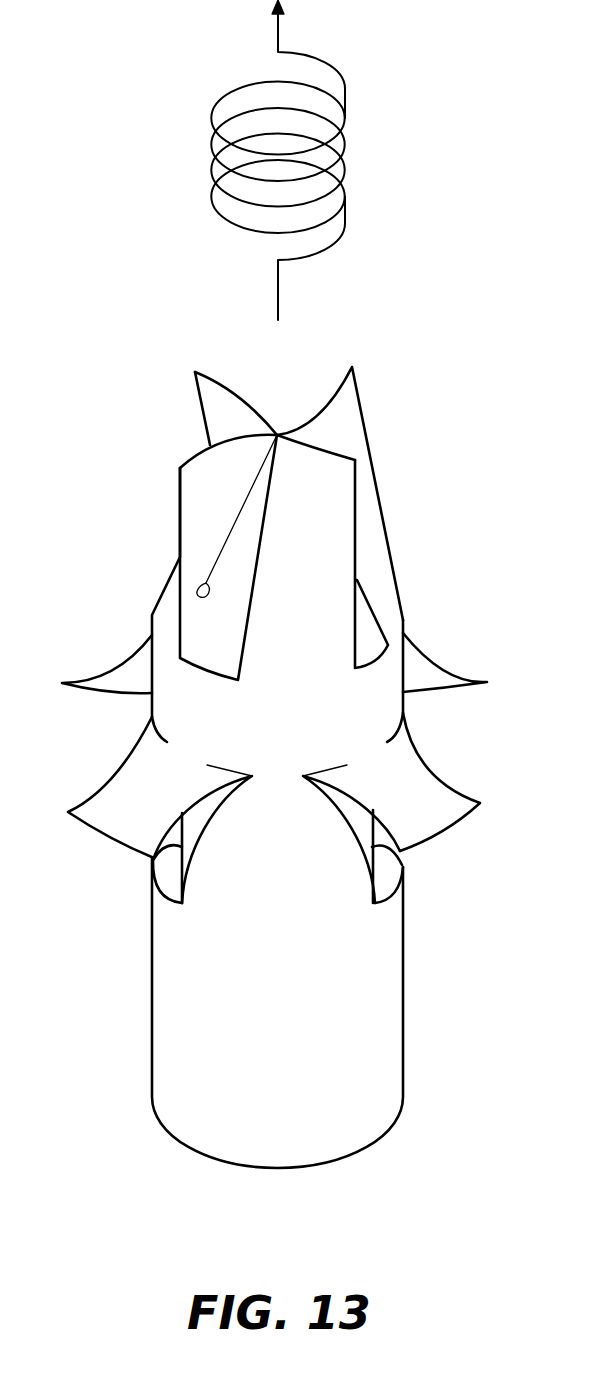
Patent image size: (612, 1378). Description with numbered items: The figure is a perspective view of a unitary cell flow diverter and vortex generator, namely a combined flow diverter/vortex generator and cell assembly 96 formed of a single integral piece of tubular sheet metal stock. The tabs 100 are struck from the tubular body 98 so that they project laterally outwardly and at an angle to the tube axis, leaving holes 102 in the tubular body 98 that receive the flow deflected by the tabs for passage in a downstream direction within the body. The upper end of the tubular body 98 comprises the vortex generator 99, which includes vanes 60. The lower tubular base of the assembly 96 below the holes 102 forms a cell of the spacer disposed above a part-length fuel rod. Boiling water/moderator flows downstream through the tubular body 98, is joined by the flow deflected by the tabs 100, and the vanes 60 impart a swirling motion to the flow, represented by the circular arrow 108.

The circular arrow 108 is at (340, 180).
The vanes 60 is at (337, 520).
The combined flow diverter/vortex generator and cell assembly 96 is at (295, 767).
The tubular body 98 is at (158, 1030).
The vortex generator 99 is at (165, 580).
The tabs 100 is at (131, 773).
The holes 102 is at (388, 873).